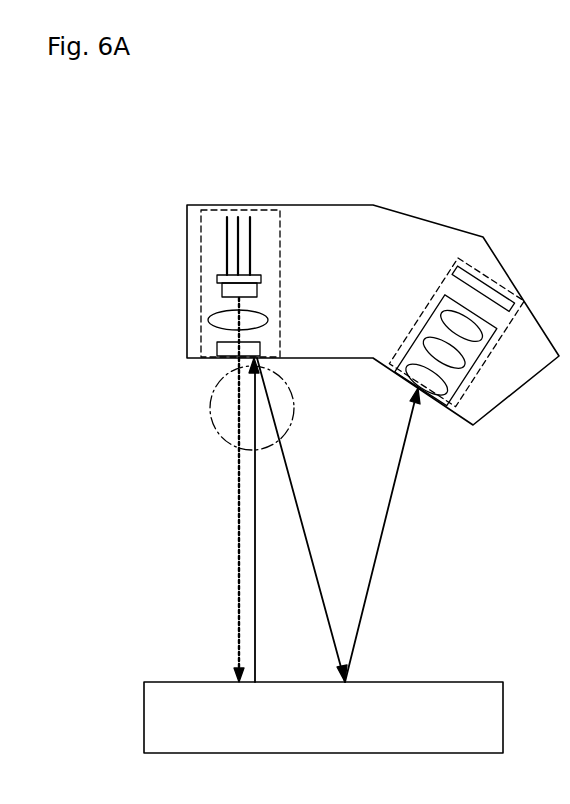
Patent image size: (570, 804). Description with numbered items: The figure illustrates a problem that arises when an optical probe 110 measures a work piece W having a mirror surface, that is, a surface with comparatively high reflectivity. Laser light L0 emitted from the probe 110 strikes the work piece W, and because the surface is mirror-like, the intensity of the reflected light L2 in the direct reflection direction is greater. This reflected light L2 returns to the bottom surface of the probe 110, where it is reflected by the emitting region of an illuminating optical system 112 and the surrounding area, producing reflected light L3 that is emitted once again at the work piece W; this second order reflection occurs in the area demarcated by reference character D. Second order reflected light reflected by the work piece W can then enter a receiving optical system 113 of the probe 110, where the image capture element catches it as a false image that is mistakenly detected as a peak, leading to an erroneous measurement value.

The optical probe 110 is at (401, 170).
The illuminating optical system 112 is at (202, 282).
The receiving optical system 113 is at (487, 278).
The work piece W is at (452, 698).
The second order reflection area D is at (210, 410).
The laser light L0 is at (237, 519).
The reflected light L2 is at (256, 598).
The reflected light L3 is at (287, 463).